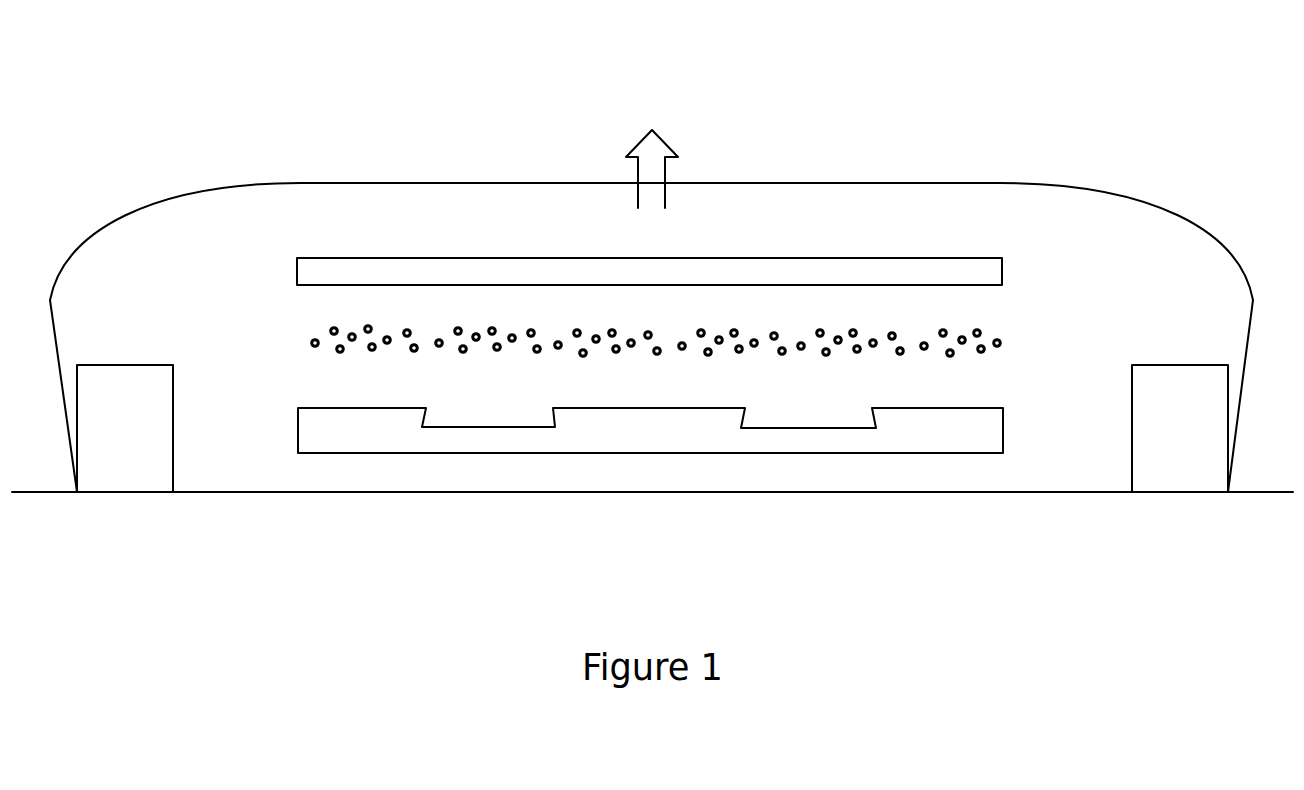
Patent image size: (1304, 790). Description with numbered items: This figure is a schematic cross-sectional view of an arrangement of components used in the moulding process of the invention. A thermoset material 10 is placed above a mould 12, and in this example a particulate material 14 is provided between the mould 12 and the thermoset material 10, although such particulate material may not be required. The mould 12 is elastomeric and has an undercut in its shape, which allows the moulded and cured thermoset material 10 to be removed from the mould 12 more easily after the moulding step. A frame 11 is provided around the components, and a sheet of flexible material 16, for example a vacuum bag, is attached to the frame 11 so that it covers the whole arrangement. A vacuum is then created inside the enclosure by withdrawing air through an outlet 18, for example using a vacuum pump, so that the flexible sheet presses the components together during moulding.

The thermoset material 10 is at (817, 272).
The frame 11 is at (130, 448).
The mould 12 is at (670, 437).
The particulate material 14 is at (988, 335).
The sheet of flexible material 16 is at (458, 182).
The outlet 18 is at (672, 137).